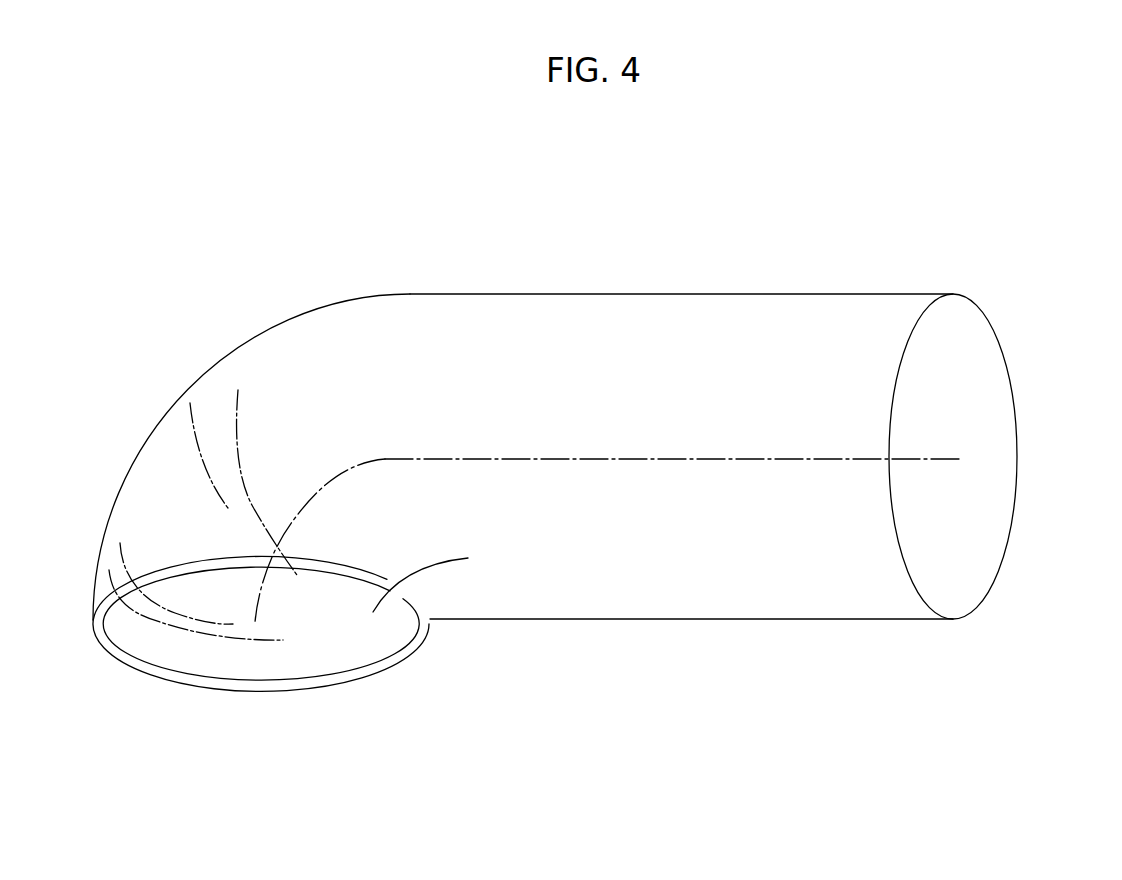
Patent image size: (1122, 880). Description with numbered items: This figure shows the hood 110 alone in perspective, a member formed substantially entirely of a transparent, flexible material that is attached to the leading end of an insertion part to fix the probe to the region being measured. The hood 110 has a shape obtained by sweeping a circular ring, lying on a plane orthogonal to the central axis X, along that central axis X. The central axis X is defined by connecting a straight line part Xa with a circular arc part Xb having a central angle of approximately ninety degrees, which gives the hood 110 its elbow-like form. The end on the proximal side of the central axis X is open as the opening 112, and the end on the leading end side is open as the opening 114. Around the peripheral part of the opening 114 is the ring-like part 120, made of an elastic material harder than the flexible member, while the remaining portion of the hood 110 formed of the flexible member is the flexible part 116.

The hood 110 is at (243, 312).
The opening 112 is at (977, 400).
The opening 114 is at (198, 650).
The flexible part 116 is at (412, 293).
The ring-like part 120 is at (352, 680).
The central axis X is at (607, 479).
The straight line part Xa is at (710, 453).
The circular arc part Xb is at (317, 490).